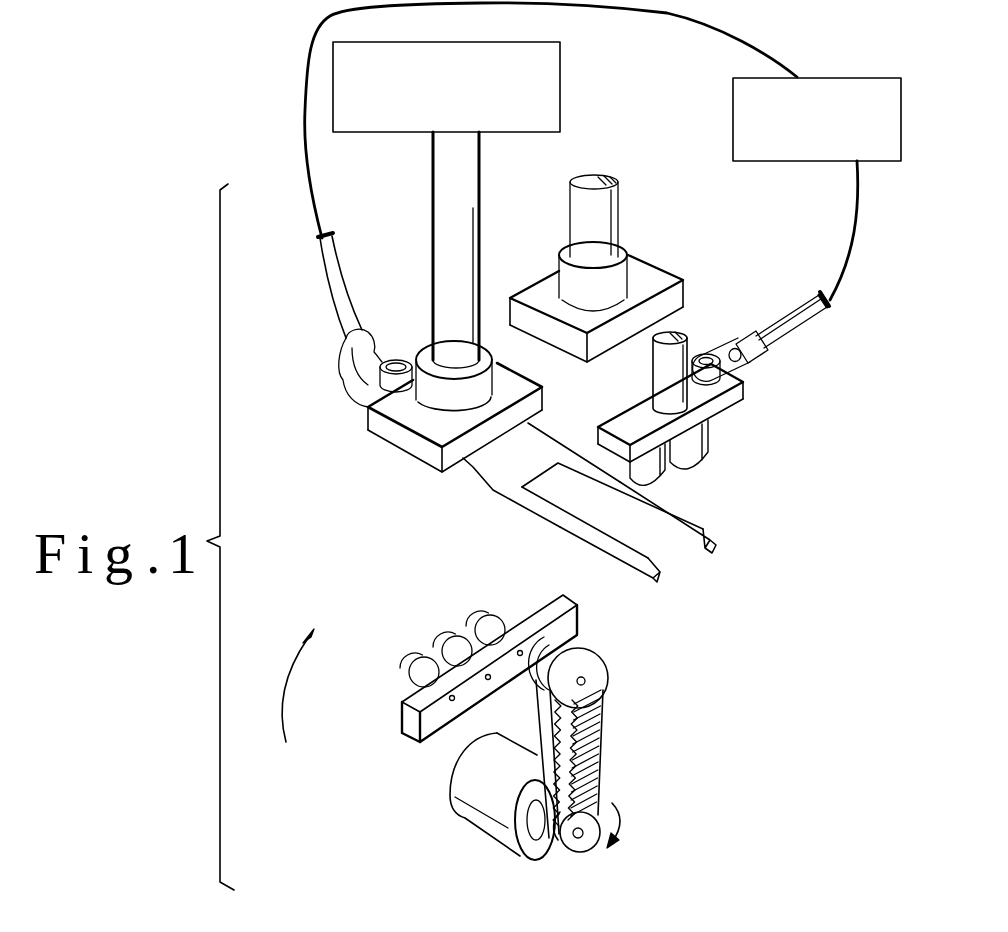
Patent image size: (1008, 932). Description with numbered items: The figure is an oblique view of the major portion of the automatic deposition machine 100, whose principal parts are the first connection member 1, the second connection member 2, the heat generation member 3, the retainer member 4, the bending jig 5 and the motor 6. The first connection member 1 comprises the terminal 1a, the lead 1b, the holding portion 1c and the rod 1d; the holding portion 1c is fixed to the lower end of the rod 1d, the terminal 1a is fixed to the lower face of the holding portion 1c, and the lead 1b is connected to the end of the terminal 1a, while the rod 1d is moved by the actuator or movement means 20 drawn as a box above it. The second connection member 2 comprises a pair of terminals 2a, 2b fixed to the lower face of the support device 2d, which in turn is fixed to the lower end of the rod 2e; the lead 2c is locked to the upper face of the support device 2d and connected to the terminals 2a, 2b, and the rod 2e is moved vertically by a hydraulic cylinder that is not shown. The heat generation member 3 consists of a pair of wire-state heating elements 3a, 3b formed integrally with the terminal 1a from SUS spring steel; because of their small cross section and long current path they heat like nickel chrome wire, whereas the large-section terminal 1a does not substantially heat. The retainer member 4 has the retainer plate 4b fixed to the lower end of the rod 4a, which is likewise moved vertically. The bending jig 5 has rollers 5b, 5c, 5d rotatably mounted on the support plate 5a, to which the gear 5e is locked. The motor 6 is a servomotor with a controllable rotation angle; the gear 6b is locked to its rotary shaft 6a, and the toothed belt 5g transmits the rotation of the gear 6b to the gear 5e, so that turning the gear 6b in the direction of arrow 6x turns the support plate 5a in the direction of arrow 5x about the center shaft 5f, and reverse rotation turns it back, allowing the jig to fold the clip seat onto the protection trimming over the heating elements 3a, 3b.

The first connection member 1 is at (410, 420).
The terminal 1a is at (467, 470).
The lead 1b is at (340, 303).
The holding portion 1c is at (368, 420).
The rod 1d is at (433, 236).
The automatic deposition machine 100 is at (465, 248).
The second connection member 2 is at (719, 373).
The terminal 2a is at (665, 478).
The terminal 2b is at (700, 453).
The lead 2c is at (785, 305).
The support device 2d is at (742, 395).
The rod 2e is at (690, 320).
The heat generation member 3 is at (644, 536).
The wire-state heating element 3a is at (658, 562).
The wire-state heating element 3b is at (700, 527).
The retainer member 4 is at (609, 250).
The rod 4a is at (608, 222).
The retainer plate 4b is at (650, 270).
The bending jig 5 is at (462, 706).
The support plate 5a is at (400, 718).
The roller 5b is at (410, 670).
The roller 5c is at (447, 645).
The roller 5d is at (485, 620).
The gear 5e is at (600, 653).
The center shaft 5f is at (586, 683).
The toothed belt 5g is at (605, 748).
The arrow 5x is at (284, 692).
The motor 6 is at (567, 821).
The rotary shaft 6a is at (576, 840).
The gear 6b is at (590, 850).
The arrow 6x is at (625, 812).
The movement means 20 is at (562, 97).